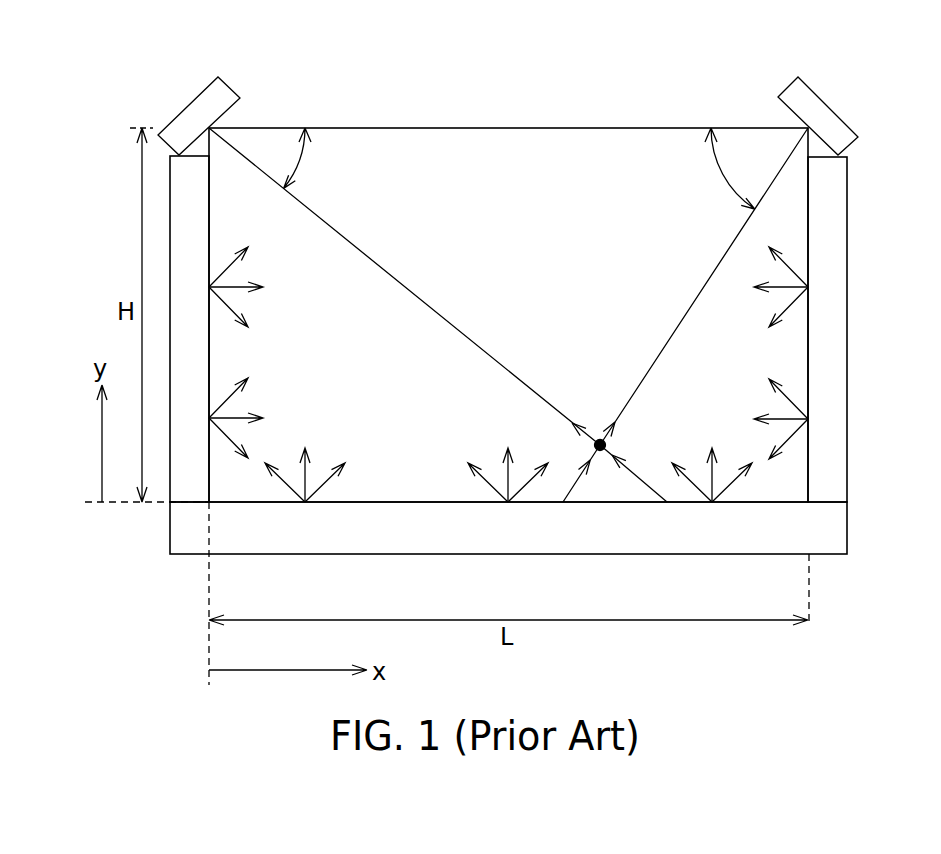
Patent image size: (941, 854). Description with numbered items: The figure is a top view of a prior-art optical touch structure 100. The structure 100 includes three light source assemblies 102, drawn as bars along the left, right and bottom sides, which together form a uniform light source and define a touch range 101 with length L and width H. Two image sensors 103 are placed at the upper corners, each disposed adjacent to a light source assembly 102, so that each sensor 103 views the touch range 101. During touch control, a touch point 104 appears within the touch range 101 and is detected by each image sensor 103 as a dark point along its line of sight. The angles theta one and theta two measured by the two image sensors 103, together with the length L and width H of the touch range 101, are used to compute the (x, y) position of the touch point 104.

The optical touch structure 100 is at (579, 67).
The touch range 101 is at (508, 127).
The light source assembly 102 is at (192, 490).
The image sensor 103 is at (183, 122).
The touch point 104 is at (600, 452).